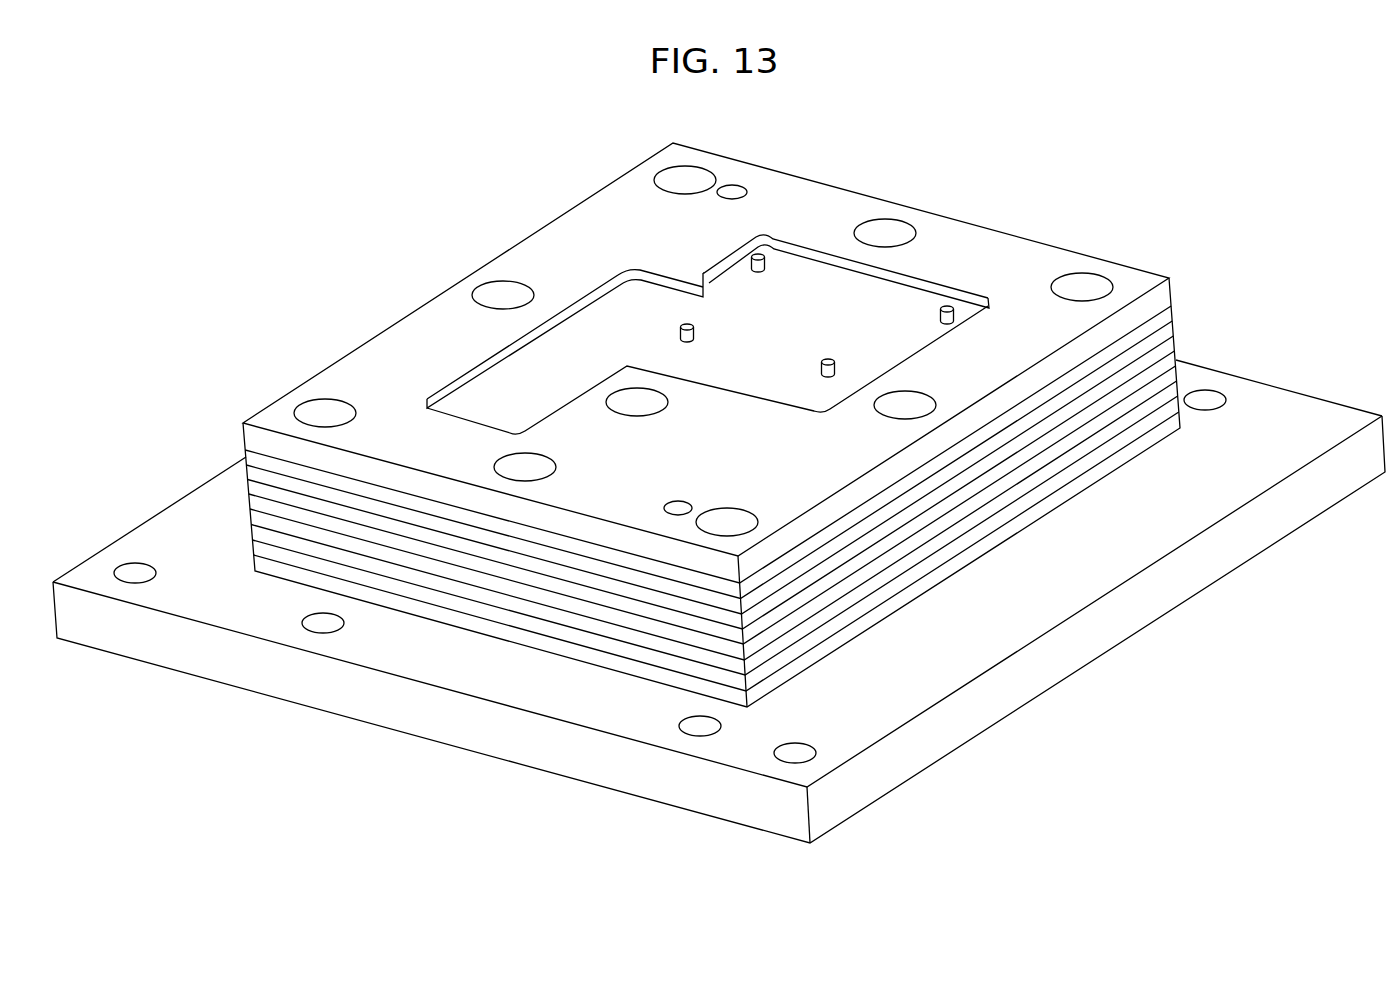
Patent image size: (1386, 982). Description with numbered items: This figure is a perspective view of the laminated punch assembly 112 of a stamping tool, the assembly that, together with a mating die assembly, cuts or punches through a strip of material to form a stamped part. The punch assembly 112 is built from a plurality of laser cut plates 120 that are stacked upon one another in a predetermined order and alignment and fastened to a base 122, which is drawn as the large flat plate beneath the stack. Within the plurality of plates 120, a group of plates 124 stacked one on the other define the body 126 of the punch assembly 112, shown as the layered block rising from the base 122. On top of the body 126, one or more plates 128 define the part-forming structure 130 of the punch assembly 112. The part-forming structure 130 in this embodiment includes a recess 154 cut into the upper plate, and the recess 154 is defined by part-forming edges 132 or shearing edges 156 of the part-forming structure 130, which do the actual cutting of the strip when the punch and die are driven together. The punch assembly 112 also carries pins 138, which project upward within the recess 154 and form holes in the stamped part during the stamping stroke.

The laminated punch assembly 112 is at (794, 408).
The laser cut plates 120 is at (719, 601).
The base 122 is at (1173, 576).
The plates 124 is at (1063, 497).
The body 126 is at (794, 482).
The plates 128 is at (1032, 260).
The part-forming structure 130 is at (681, 272).
The part-forming edges 132 is at (905, 270).
The pins 138 is at (693, 325).
The recess 154 is at (592, 287).
The shearing edges 156 is at (482, 362).